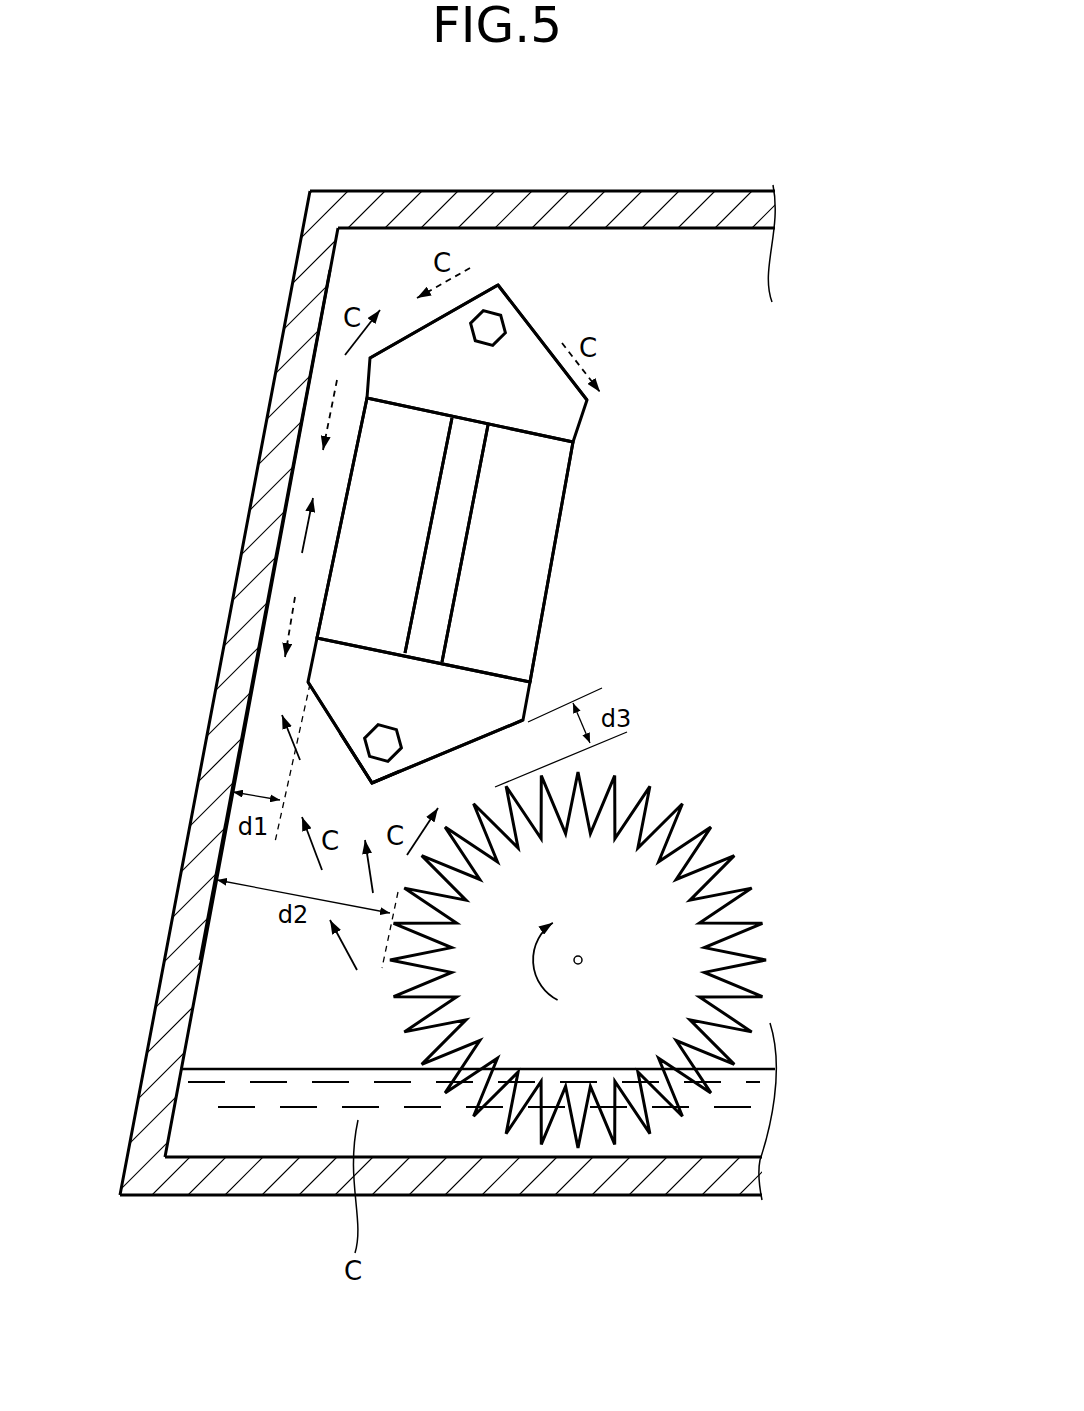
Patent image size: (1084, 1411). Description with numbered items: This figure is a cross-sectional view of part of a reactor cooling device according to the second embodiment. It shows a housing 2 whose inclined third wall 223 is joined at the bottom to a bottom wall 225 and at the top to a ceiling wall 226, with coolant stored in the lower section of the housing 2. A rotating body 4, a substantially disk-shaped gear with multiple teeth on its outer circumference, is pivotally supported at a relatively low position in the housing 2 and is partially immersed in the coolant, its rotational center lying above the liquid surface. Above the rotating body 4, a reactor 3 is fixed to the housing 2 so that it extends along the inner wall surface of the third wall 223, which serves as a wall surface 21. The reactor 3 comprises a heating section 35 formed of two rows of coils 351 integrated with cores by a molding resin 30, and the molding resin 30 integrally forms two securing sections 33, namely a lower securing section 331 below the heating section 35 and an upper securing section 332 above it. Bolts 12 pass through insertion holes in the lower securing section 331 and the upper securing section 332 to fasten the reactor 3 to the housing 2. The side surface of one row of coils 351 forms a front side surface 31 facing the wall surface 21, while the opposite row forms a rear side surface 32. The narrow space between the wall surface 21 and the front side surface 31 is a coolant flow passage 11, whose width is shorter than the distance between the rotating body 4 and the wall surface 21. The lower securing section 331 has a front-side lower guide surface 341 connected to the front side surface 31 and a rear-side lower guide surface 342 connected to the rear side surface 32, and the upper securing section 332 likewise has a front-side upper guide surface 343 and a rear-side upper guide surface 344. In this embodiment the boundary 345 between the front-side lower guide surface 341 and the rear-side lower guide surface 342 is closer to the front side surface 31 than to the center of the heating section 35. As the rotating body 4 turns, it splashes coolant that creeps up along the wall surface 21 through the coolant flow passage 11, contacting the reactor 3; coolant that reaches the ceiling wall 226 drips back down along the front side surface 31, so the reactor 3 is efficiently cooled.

The housing 2 is at (542, 706).
The wall surface 21 is at (292, 596).
The third wall 223 is at (273, 507).
The bottom wall 225 is at (538, 1178).
The ceiling wall 226 is at (598, 217).
The coolant flow passage 11 is at (303, 563).
The bolt 12 is at (488, 327).
The reactor 3 is at (500, 480).
The molding resin 30 is at (562, 417).
The front side surface 31 is at (345, 478).
The rear side surface 32 is at (548, 603).
The securing section 33 is at (434, 446).
The lower securing section 331 is at (368, 750).
The upper securing section 332 is at (510, 350).
The front-side lower guide surface 341 is at (323, 713).
The rear-side lower guide surface 342 is at (480, 737).
The front-side upper guide surface 343 is at (405, 333).
The rear-side upper guide surface 344 is at (550, 347).
The boundary 345 is at (372, 783).
The heating section 35 is at (525, 523).
The coil 351 is at (377, 502).
The rotating body 4 is at (660, 935).